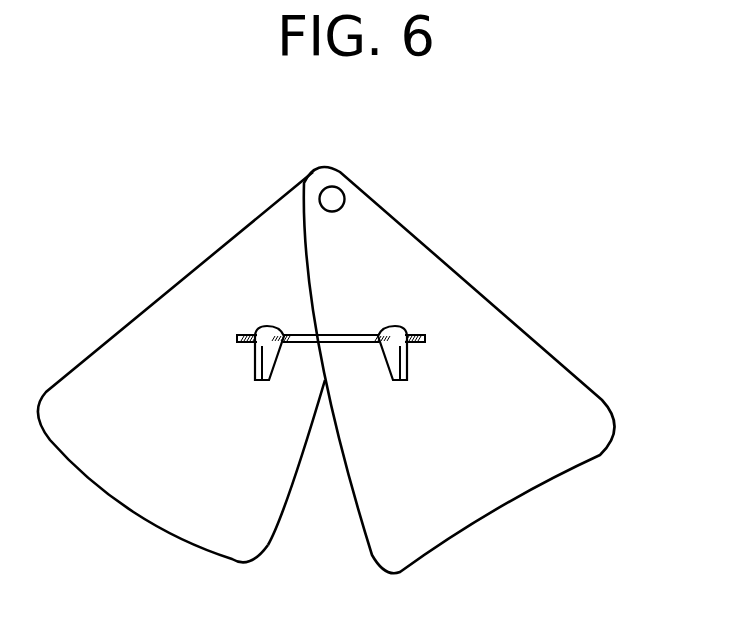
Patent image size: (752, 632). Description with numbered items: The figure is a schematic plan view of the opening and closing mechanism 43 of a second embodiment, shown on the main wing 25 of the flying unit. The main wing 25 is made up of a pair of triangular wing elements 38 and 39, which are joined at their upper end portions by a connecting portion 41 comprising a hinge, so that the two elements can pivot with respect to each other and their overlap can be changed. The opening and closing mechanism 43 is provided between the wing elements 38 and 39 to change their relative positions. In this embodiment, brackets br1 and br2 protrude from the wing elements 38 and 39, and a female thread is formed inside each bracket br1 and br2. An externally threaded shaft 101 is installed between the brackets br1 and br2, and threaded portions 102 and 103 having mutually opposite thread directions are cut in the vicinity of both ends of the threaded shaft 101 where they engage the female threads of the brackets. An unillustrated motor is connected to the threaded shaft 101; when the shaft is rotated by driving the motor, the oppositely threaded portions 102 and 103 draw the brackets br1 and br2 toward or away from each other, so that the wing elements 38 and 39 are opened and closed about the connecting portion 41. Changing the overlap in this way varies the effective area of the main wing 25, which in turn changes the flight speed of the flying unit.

The main wing 25 is at (458, 204).
The wing element 38 is at (503, 342).
The wing element 39 is at (198, 275).
The connecting portion 41 is at (340, 178).
The opening and closing mechanism 43 is at (349, 394).
The threaded shaft 101 is at (357, 324).
The threaded portion 102 is at (421, 331).
The threaded portion 103 is at (254, 326).
The bracket br1 is at (408, 376).
The bracket br2 is at (254, 376).